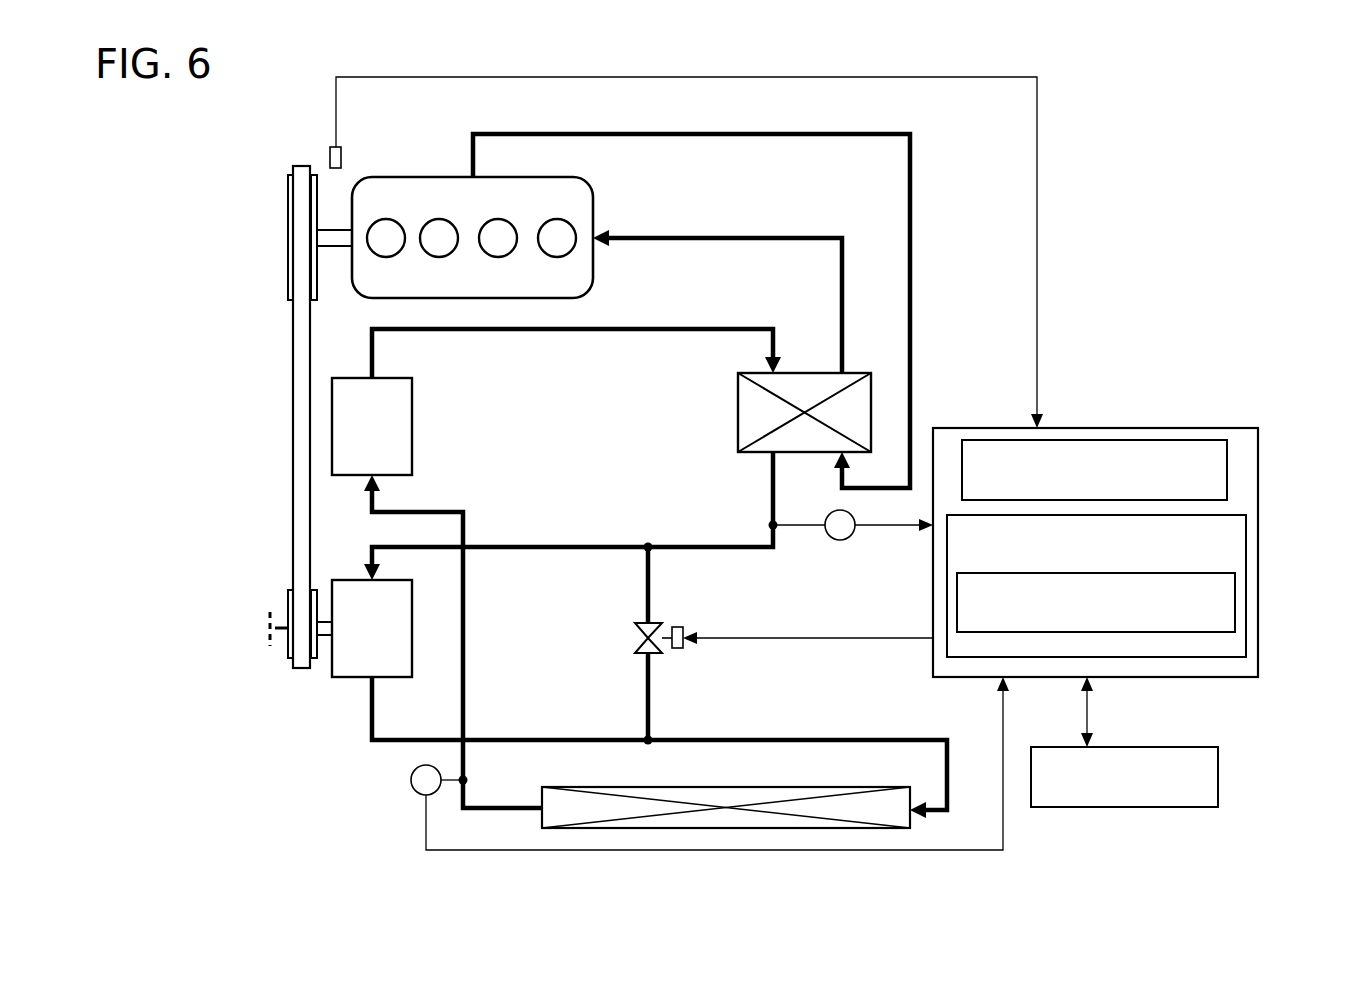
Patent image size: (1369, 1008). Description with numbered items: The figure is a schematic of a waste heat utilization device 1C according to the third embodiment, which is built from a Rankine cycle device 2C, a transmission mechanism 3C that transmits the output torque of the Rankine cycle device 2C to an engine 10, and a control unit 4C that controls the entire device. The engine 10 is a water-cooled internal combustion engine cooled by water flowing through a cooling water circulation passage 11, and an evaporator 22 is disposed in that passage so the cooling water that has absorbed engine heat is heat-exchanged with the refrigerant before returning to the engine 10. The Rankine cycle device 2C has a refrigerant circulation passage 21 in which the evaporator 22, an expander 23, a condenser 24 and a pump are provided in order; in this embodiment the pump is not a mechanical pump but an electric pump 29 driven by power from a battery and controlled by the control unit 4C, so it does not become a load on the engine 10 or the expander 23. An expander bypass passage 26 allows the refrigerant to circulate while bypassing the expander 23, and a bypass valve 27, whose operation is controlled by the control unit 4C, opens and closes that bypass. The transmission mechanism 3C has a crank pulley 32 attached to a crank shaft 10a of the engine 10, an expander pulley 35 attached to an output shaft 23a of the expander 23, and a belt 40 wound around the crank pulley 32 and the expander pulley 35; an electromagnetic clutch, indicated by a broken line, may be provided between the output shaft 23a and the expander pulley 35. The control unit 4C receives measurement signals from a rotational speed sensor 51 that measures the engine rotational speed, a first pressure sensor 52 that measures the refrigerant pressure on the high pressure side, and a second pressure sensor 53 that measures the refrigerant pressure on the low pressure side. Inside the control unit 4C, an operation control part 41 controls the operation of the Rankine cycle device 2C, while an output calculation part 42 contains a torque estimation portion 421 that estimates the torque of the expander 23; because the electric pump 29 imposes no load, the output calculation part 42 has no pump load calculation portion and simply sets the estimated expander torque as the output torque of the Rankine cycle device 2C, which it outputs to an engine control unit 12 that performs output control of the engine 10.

The engine 10 is at (593, 190).
The crank shaft 10a is at (336, 250).
The cooling water circulation passage 11 is at (913, 228).
The engine control unit 12 is at (1158, 747).
The circulation passage 21 is at (648, 326).
The evaporator 22 is at (800, 372).
The expander 23 is at (358, 641).
The output shaft 23a is at (325, 642).
The condenser 24 is at (710, 787).
The expander bypass passage 26 is at (648, 598).
The bypass valve 27 is at (646, 640).
The electric pump 29 is at (358, 438).
The crank pulley 32 is at (287, 215).
The expander pulley 35 is at (287, 600).
The belt 40 is at (298, 428).
The operation control part 41 is at (1227, 458).
The output calculation part 42 is at (1246, 538).
The torque estimation portion 421 is at (1235, 600).
The rotational speed sensor 51 is at (330, 157).
The first pressure sensor 52 is at (835, 540).
The second pressure sensor 53 is at (411, 780).
The waste heat utilization device 1C is at (1083, 133).
The Rankine cycle device 2C is at (395, 841).
The transmission mechanism 3C is at (205, 330).
The control unit 4C is at (1203, 427).